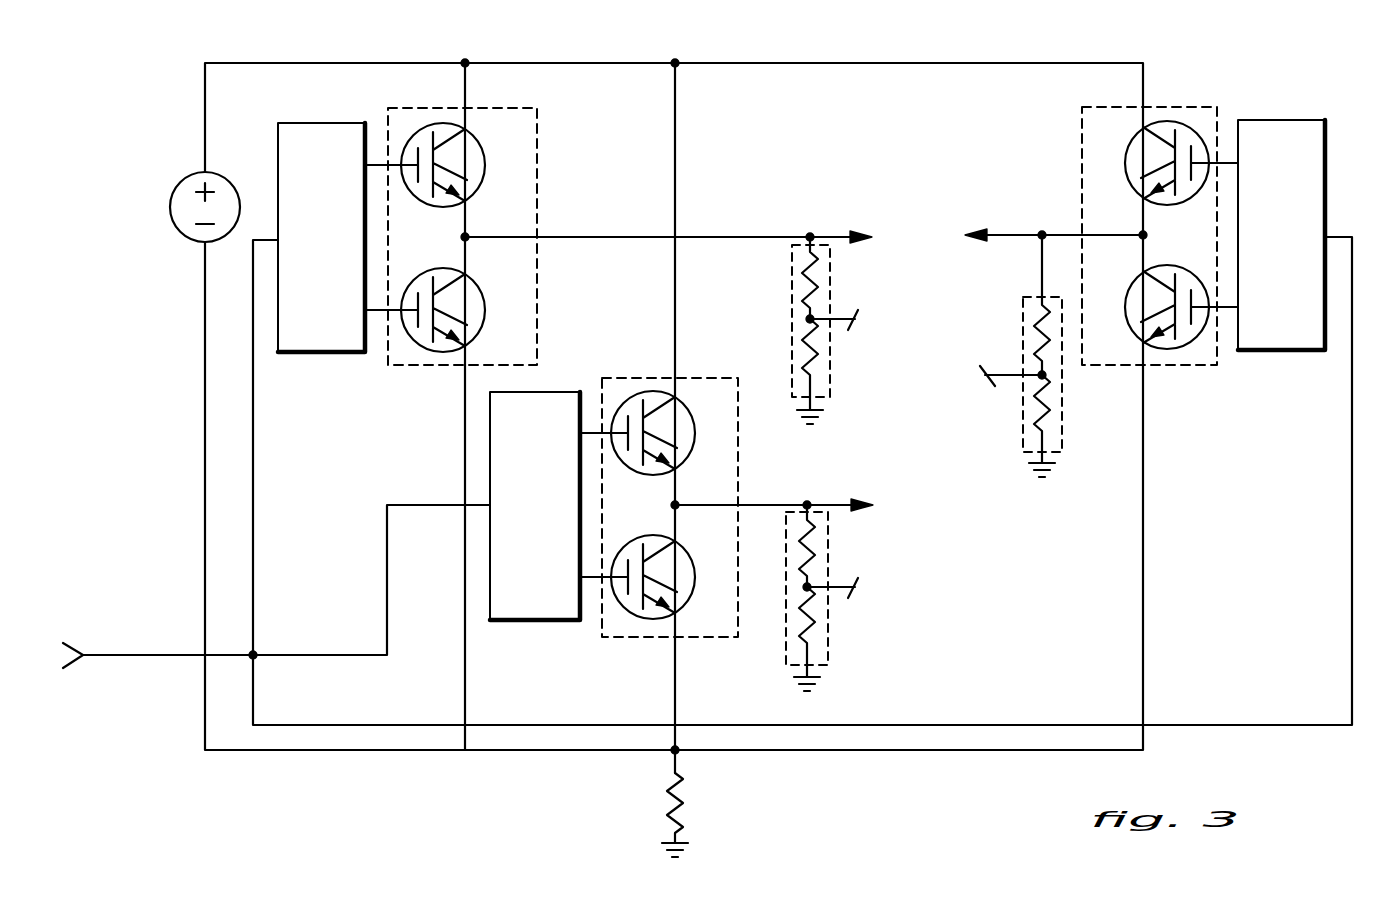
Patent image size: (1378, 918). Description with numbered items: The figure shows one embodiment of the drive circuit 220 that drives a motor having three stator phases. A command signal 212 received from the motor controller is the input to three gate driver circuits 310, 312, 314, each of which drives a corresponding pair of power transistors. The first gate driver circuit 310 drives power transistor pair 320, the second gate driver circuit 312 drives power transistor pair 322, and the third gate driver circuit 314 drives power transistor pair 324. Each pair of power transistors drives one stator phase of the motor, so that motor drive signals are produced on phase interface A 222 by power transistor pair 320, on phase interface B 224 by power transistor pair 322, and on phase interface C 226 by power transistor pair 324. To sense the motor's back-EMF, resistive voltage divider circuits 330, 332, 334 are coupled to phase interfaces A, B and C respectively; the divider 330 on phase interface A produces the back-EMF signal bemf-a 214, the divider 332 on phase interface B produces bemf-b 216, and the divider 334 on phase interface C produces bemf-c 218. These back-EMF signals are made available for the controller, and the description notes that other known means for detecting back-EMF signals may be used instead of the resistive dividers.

The drive circuit 220 is at (168, 128).
The command signal 212 is at (138, 658).
The bemf-a 214 is at (812, 318).
The bemf-b 216 is at (809, 586).
The bemf-c 218 is at (1040, 374).
The phase interface A 222 is at (848, 232).
The phase interface B 224 is at (1015, 235).
The phase interface C 226 is at (845, 502).
The gate driver circuit 310 is at (287, 122).
The gate driver circuit 312 is at (522, 622).
The gate driver circuit 314 is at (1284, 352).
The power transistor pair 320 is at (540, 152).
The power transistor pair 322 is at (650, 640).
The power transistor pair 324 is at (1178, 107).
The resistive voltage divider circuit 330 is at (792, 276).
The resistive voltage divider circuit 332 is at (830, 630).
The resistive voltage divider circuit 334 is at (1064, 398).